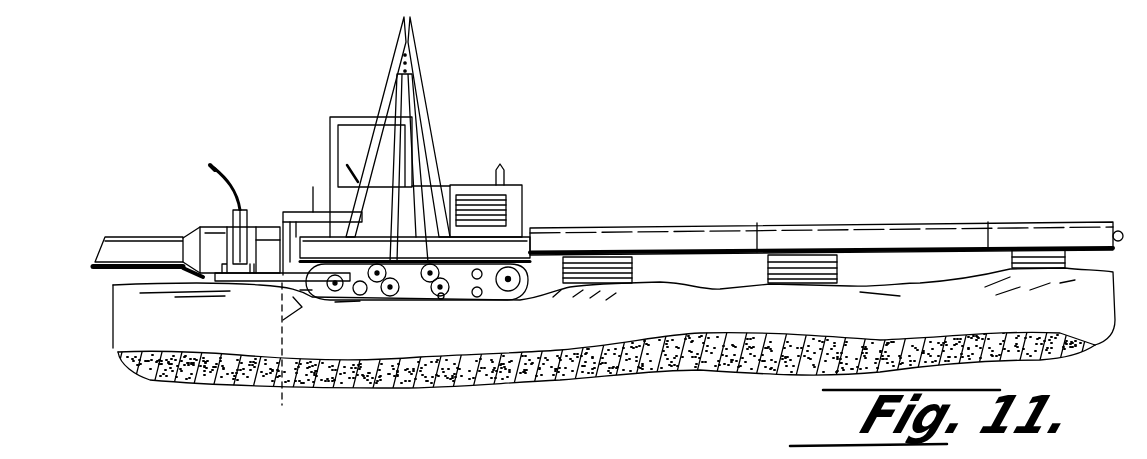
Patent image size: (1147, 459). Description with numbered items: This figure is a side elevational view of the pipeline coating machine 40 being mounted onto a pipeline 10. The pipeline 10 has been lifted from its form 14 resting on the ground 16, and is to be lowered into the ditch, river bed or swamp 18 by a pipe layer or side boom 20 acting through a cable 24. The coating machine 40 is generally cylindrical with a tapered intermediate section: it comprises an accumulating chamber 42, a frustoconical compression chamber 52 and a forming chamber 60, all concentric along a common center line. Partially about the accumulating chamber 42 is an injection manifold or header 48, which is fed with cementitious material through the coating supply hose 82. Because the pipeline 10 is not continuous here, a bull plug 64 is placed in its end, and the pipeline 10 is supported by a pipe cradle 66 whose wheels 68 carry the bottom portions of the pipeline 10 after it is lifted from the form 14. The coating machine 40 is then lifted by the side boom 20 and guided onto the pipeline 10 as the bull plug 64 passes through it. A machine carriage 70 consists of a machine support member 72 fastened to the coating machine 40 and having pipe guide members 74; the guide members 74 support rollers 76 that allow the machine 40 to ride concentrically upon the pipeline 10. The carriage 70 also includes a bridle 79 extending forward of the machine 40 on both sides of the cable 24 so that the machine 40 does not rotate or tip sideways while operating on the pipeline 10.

The pipeline 10 is at (713, 222).
The form 14 is at (838, 262).
The ground 16 is at (838, 281).
The ditch, river bed or swamp 18 is at (717, 318).
The pipe layer or side boom 20 is at (318, 88).
The cable 24 is at (395, 100).
The pipeline coating machine 40 is at (221, 265).
The accumulating chamber 42 is at (216, 227).
The injection manifold or header 48 is at (242, 223).
The compression chamber 52 is at (188, 232).
The forming chamber 60 is at (130, 248).
The bull plug 64 is at (286, 212).
The pipe cradle 66 is at (403, 297).
The wheels 68 is at (441, 297).
The machine carriage 70 is at (253, 247).
The machine support member 72 is at (253, 276).
The pipe guide members 74 is at (300, 305).
The rollers 76 is at (284, 356).
The bridle 79 is at (312, 214).
The coating supply hose 82 is at (213, 165).